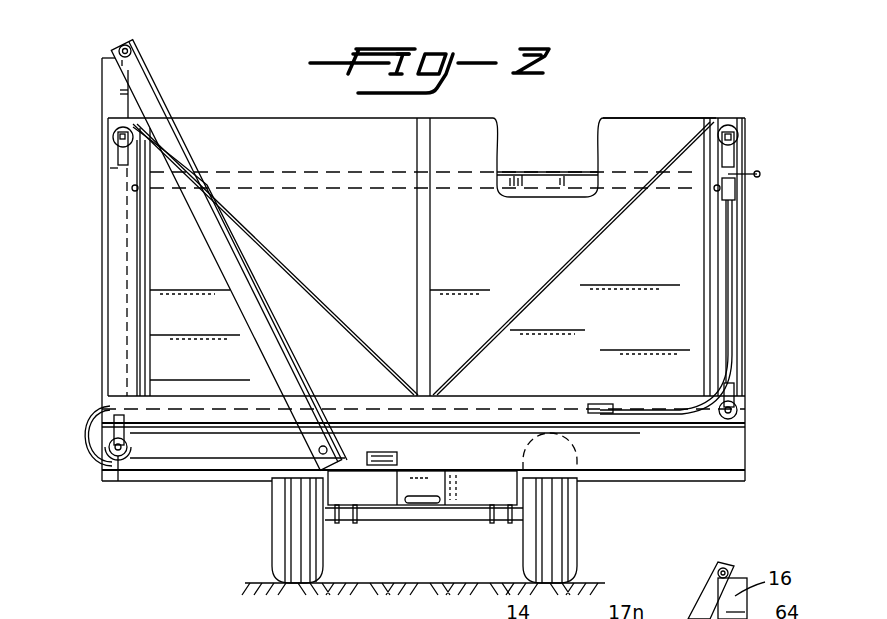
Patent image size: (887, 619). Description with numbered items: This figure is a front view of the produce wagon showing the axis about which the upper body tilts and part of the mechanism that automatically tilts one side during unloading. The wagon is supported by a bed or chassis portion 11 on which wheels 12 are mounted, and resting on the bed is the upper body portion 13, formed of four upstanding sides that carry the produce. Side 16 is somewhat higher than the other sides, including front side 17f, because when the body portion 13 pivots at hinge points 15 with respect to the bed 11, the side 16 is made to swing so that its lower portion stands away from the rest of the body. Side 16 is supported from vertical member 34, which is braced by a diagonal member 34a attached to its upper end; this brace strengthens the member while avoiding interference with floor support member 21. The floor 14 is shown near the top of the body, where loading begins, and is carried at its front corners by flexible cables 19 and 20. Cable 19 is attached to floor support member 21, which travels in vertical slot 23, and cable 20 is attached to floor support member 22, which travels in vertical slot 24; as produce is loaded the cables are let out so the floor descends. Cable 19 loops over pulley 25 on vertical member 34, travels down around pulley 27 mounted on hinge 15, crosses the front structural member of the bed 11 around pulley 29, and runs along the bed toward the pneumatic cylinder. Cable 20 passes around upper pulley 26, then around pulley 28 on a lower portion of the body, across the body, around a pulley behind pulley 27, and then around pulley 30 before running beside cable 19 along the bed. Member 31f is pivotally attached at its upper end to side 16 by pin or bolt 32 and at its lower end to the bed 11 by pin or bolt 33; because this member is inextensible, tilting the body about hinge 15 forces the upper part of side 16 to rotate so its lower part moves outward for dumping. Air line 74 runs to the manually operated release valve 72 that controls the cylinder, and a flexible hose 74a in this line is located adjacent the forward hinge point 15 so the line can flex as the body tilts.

The bed or chassis portion 11 is at (728, 458).
The wheels 12 is at (578, 536).
The upper body portion 13 is at (765, 318).
The floor 14 is at (548, 172).
The hinge or pivot points 15 is at (106, 456).
The side 16 is at (105, 76).
The front side 17f is at (654, 136).
The flexible cable 19 is at (118, 180).
The flexible cable 20 is at (300, 455).
The floor support member 21 is at (133, 190).
The floor support member 22 is at (736, 192).
The vertical slot 23 is at (137, 253).
The vertical slot 24 is at (717, 248).
The pulley 25 is at (116, 139).
The upper pulley 26 is at (738, 136).
The pulley 27 is at (118, 452).
The pulley 28 is at (737, 410).
The pulley 29 is at (385, 465).
The pulley 30 is at (375, 452).
The member 31f is at (290, 346).
The pin or bolt 32 is at (131, 52).
The pin or bolt 33 is at (327, 450).
The vertical member 34 is at (110, 132).
The diagonal member 34a is at (300, 268).
The release valve 72 is at (760, 172).
The air line 74 is at (730, 358).
The flexible hose 74a is at (88, 405).